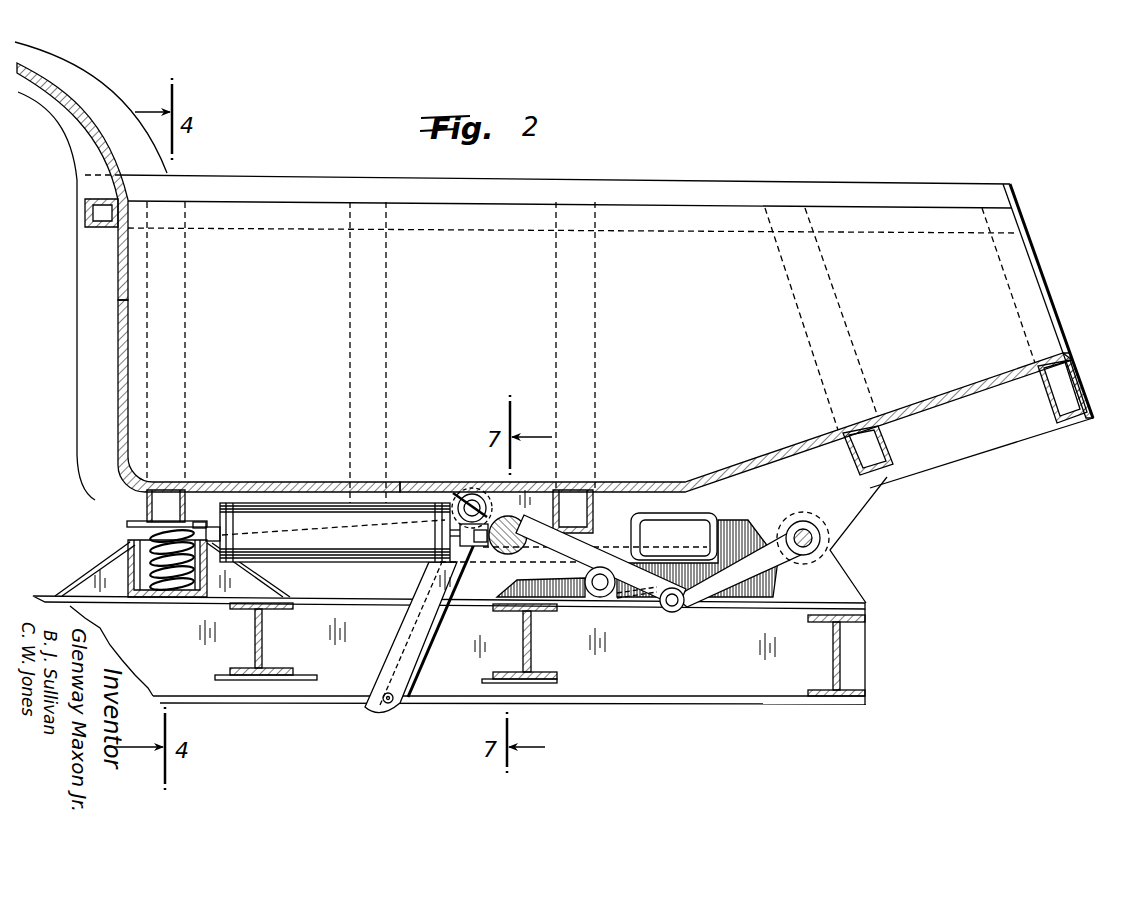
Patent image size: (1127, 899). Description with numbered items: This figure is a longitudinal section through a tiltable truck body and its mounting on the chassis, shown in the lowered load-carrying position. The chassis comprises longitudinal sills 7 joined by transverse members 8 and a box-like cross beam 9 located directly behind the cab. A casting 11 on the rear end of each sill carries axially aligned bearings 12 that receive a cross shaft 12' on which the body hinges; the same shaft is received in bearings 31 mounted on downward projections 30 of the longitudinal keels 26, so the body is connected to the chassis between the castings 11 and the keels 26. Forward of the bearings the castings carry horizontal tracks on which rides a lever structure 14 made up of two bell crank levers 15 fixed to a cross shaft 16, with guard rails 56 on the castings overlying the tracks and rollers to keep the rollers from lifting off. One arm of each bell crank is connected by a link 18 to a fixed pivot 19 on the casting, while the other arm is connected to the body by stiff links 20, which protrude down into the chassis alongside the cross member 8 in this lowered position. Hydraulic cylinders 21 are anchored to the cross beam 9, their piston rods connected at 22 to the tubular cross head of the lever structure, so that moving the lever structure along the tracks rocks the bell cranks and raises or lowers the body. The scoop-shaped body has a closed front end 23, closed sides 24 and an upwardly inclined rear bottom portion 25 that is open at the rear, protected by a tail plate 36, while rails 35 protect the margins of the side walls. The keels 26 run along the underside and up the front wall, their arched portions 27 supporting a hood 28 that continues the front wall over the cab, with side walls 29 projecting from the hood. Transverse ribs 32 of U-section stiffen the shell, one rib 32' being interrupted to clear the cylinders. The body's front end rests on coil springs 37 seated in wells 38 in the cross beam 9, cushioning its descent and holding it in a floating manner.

The longitudinal sill 7 is at (651, 686).
The transverse member 8 is at (262, 648).
The box-like cross beam 9 is at (123, 580).
The casting 11 is at (753, 530).
The bearing 12 is at (812, 515).
The cross shaft 12' is at (803, 558).
The lever structure 14 is at (572, 545).
The bell crank lever 15 is at (441, 640).
The cross shaft 16 is at (488, 604).
The link 18 is at (650, 603).
The fixed pivot 19 is at (690, 605).
The stiff link 20 is at (390, 704).
The hydraulic cylinder 21 is at (297, 527).
The piston rod connection 22 is at (462, 528).
The closed front end 23 is at (118, 327).
The closed side 24 is at (290, 242).
The upwardly inclined bottom portion 25 is at (213, 478).
The longitudinal keel 26 is at (990, 440).
The arched portion of keel 27 is at (72, 122).
The hood 28 is at (80, 97).
The side wall of hood 29 is at (152, 168).
The downward projection 30 is at (848, 509).
The bearing 31 is at (835, 545).
The transverse rib 32 is at (131, 501).
The interrupted rib 32' is at (398, 366).
The rail 35 is at (805, 190).
The tail plate 36 is at (1043, 287).
The coil spring 37 is at (128, 560).
The well 38 is at (170, 592).
The guard rail 56 is at (525, 515).